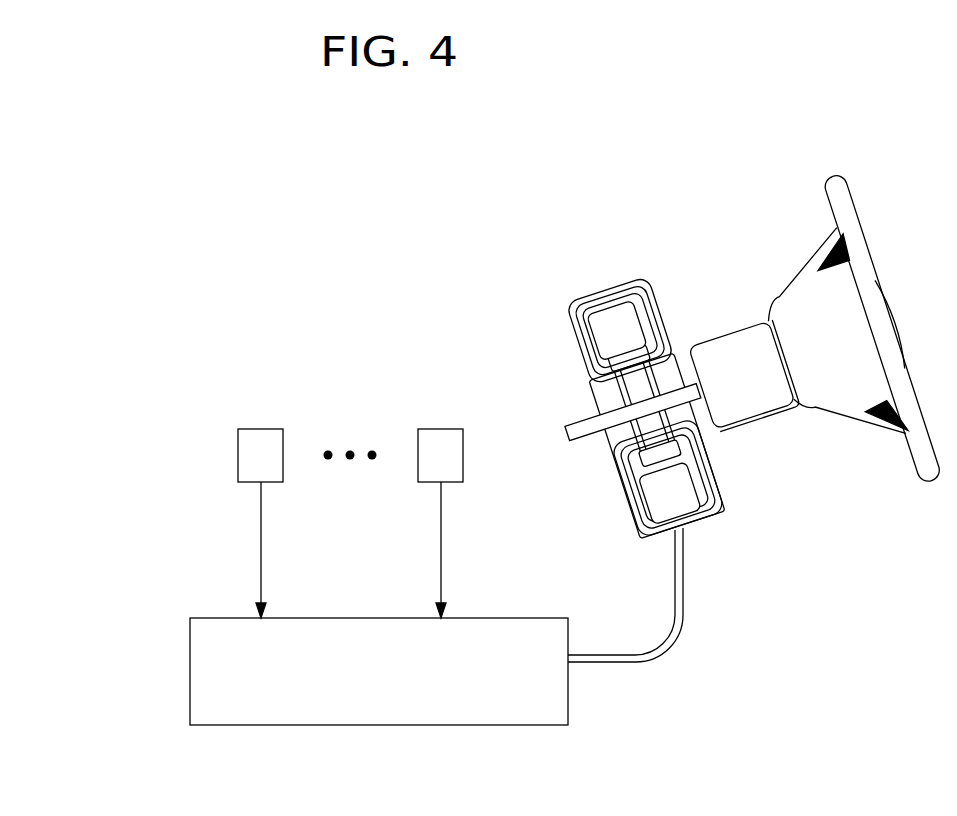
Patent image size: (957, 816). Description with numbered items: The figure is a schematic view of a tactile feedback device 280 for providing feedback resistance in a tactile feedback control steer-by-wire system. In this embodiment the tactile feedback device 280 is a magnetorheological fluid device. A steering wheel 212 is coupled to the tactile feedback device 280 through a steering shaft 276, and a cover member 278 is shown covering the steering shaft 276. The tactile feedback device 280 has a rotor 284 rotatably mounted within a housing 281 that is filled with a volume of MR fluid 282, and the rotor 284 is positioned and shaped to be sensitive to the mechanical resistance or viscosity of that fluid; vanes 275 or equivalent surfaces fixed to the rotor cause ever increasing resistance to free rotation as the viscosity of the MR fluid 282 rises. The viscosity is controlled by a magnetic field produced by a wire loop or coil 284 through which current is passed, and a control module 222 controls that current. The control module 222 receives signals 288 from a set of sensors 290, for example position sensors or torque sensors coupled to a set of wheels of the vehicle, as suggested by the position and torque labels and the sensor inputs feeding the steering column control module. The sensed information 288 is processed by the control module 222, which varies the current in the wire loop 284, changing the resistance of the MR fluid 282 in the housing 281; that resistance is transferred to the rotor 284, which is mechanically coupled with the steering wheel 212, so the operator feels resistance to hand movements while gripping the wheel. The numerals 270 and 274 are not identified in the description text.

The steering wheel 212 is at (837, 168).
The control module 222 is at (545, 725).
The sensor system 270 is at (268, 423).
The substrate 274 is at (695, 420).
The vanes 275 is at (607, 447).
The steering shaft 276 is at (687, 357).
The cover member 278 is at (752, 320).
The tactile feedback device 280 is at (634, 374).
The housing 281 is at (630, 277).
The MR fluid 282 is at (582, 403).
The rotor 284 is at (604, 326).
The signals 288 is at (441, 533).
The set of sensors 290 is at (437, 432).